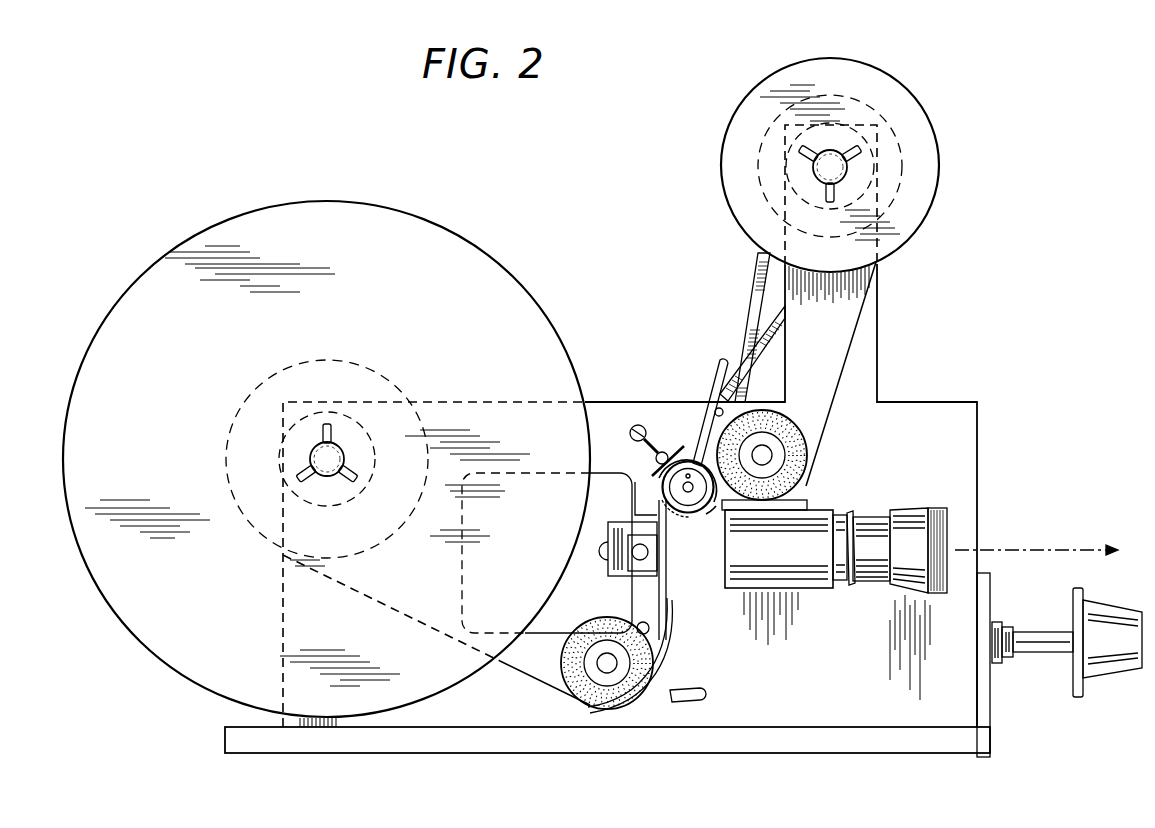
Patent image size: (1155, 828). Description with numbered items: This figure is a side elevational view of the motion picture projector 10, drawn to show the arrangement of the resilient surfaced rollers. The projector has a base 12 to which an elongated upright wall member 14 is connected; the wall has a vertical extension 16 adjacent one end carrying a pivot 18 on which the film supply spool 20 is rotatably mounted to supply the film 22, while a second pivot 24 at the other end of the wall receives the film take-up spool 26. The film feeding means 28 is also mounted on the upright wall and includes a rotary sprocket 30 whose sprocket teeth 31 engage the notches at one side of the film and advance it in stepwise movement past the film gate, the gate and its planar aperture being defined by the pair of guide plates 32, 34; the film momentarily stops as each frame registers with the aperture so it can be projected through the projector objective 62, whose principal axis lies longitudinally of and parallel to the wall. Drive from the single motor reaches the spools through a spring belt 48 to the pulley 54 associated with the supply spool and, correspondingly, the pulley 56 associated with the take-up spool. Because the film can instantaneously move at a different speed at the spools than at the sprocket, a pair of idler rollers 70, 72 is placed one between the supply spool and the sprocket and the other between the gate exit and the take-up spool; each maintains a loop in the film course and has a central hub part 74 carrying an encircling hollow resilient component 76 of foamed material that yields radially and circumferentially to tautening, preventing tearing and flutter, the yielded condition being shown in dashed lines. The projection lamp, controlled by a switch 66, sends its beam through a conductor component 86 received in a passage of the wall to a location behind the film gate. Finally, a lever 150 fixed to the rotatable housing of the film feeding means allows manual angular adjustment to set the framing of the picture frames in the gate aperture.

The motion picture projector 10 is at (590, 198).
The base 12 is at (817, 737).
The upright wall member 14 is at (875, 677).
The vertical extension 16 is at (877, 320).
The pivot 18 is at (822, 168).
The film supply spool 20 is at (905, 113).
The film 22 is at (860, 309).
The second pivot 24 is at (316, 459).
The film take-up spool 26 is at (125, 303).
The film feeding means 28 is at (679, 434).
The rotary sprocket 30 is at (683, 525).
The sprocket teeth 31 is at (717, 531).
The guide plate 32 is at (654, 503).
The guide plate 34 is at (668, 594).
The spring belt 48 is at (758, 272).
The pulley 54 is at (858, 204).
The pulley 56 is at (362, 452).
The projector objective 62 is at (918, 508).
The switch 66 is at (1048, 648).
The idler roller 70 is at (802, 427).
The idler roller 72 is at (572, 654).
The central hub part 74 is at (775, 452).
The resilient component 76 is at (780, 426).
The conductor component 86 is at (630, 588).
The lever 150 is at (718, 368).